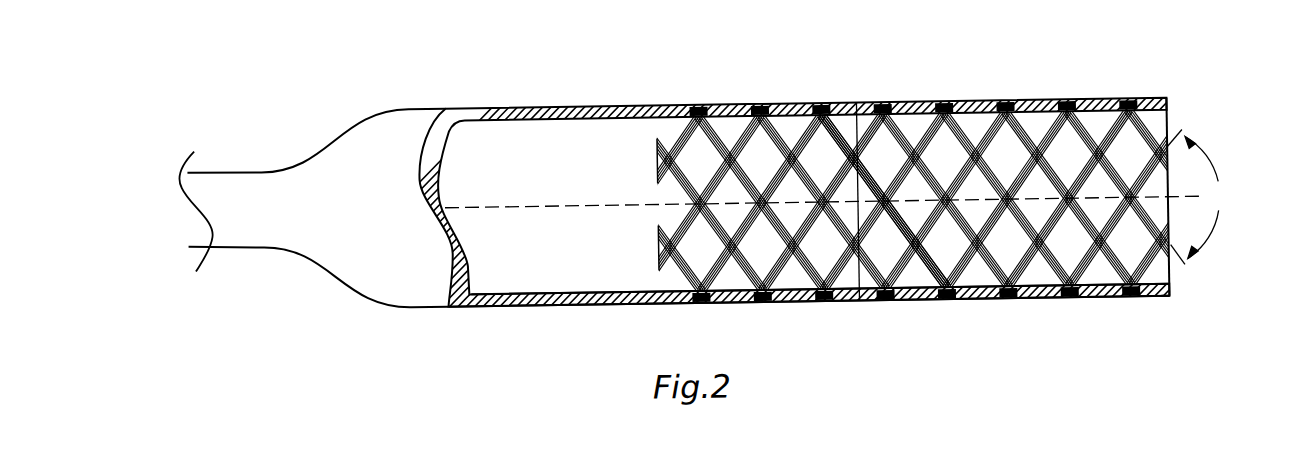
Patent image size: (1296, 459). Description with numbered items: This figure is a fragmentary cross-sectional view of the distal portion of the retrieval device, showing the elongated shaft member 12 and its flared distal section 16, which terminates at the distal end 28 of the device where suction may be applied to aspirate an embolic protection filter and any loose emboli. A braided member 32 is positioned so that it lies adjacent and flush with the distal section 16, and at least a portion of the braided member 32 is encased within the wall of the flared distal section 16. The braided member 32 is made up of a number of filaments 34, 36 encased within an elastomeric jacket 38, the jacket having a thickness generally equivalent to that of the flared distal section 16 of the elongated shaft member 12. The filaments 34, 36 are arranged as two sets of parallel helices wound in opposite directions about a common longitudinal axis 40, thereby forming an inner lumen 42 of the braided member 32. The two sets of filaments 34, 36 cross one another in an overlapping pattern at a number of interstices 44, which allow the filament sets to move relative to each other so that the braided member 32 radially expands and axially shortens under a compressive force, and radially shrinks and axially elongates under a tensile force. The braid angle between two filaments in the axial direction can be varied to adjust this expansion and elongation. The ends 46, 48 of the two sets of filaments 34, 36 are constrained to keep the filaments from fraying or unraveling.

The elongated shaft member 12 is at (410, 125).
The distal section 16 is at (712, 87).
The braided member 32 is at (968, 96).
The distal end 28 is at (1167, 112).
The common longitudinal axis 40 is at (530, 206).
The end of filaments 46 is at (650, 265).
The filament 34 is at (858, 295).
The interstices 44 is at (918, 268).
The filament 36 is at (927, 296).
The elastomeric jacket 38 is at (993, 307).
The inner lumen 42 is at (1078, 263).
The end of filaments 48 is at (1184, 299).